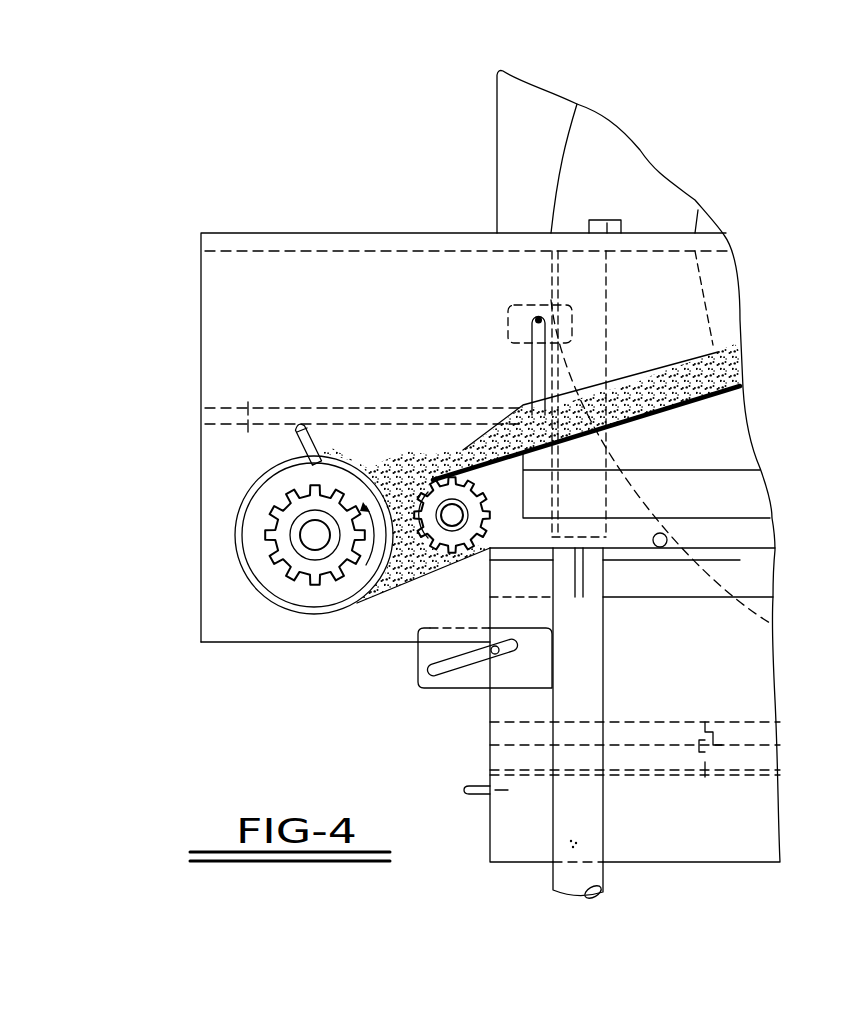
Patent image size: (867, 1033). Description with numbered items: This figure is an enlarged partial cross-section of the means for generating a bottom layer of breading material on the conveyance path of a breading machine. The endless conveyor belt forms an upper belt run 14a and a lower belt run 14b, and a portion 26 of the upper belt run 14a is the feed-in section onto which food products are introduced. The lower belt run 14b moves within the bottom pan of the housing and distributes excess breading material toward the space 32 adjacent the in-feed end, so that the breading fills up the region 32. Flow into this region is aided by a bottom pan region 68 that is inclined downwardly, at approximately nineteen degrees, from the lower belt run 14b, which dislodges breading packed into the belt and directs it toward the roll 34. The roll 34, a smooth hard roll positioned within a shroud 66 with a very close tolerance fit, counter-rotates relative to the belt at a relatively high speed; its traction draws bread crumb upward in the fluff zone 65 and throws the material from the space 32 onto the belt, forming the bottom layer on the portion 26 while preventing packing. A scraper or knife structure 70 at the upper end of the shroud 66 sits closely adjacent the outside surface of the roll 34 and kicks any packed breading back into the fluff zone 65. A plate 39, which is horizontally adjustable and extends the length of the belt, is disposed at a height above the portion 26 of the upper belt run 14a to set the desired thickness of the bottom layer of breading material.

The upper belt run 14a is at (691, 408).
The lower belt run 14b is at (740, 556).
The feed-in portion of upper belt run 26 is at (709, 380).
The space 32 is at (400, 568).
The roll 34 is at (312, 593).
The plate 39 is at (532, 380).
The fluff zone 65 is at (389, 448).
The shroud 66 is at (248, 583).
The bottom pan region 68 is at (428, 581).
The scraper or knife structure 70 is at (298, 426).